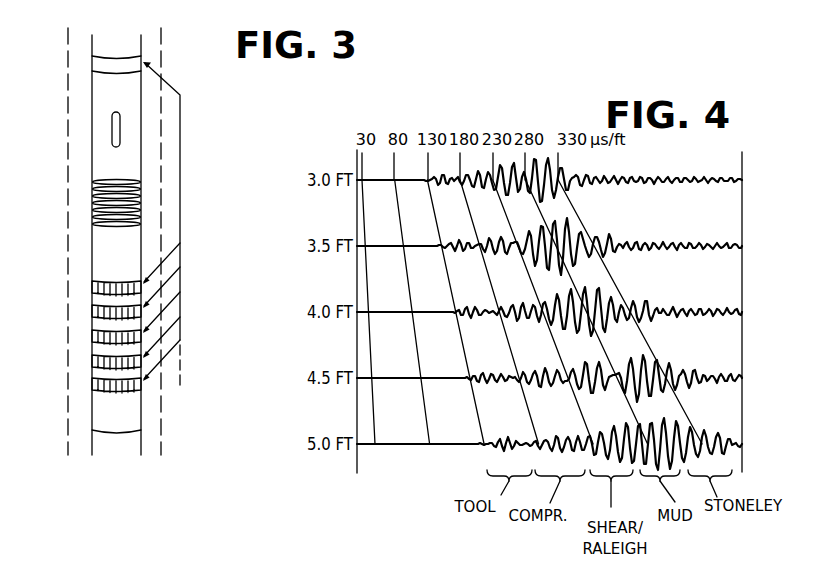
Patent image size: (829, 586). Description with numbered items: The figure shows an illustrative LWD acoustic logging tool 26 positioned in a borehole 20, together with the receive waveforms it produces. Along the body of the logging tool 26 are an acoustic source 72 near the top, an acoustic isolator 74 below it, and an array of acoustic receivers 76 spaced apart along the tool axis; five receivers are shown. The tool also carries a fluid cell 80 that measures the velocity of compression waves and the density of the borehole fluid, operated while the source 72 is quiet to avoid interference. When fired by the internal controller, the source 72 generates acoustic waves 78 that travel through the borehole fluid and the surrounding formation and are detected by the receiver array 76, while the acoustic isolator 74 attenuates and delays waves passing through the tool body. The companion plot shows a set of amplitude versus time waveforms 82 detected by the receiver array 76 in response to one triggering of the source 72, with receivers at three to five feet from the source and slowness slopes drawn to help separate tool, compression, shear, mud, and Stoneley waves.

In FIG. 3, the borehole 20 is at (160, 57).
In FIG. 3, the acoustic logging tool 26 is at (97, 415).
In FIG. 3, the acoustic source 72 is at (97, 70).
In FIG. 3, the acoustic isolator 74 is at (92, 195).
In FIG. 3, the array of acoustic receivers 76 is at (88, 279).
In FIG. 3, the acoustic waves 78 is at (170, 87).
In FIG. 3, the fluid cell 80 is at (108, 128).
In FIG. 4, the amplitude versus time waveforms 82 is at (752, 160).